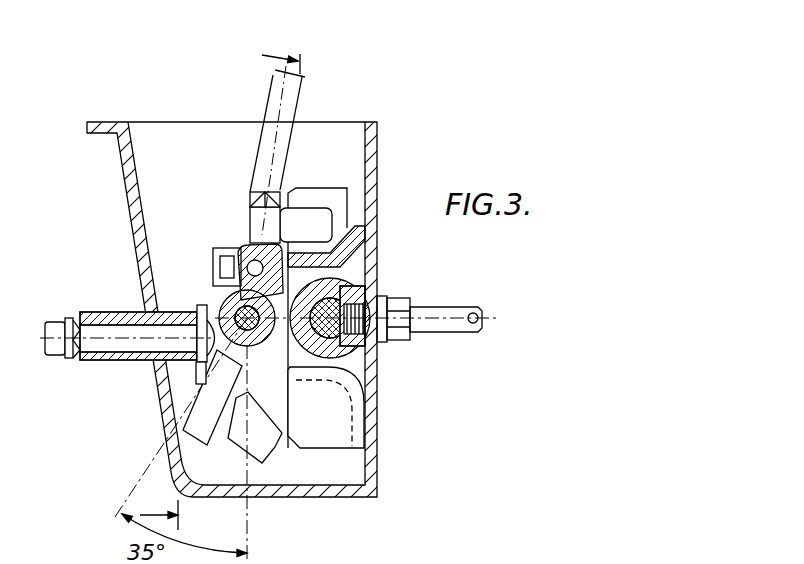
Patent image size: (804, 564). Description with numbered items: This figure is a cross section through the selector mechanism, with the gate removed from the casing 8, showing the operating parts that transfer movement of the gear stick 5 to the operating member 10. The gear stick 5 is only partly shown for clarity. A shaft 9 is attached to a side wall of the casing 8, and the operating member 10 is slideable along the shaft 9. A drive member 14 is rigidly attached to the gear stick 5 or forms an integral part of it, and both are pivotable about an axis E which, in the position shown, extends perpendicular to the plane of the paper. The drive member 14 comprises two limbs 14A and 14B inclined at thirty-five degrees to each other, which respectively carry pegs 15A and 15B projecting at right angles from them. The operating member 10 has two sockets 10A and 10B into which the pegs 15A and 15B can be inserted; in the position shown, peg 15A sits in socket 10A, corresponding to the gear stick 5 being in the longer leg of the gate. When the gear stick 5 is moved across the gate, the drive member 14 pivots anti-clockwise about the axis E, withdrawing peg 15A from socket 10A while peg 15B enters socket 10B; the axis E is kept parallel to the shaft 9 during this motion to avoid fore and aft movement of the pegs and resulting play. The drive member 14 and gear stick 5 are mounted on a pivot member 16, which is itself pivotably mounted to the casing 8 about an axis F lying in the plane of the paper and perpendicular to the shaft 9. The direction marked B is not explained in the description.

The gear stick 5 is at (272, 108).
The casing 8 is at (122, 168).
The shaft 9 is at (372, 275).
The operating member 10 is at (394, 297).
The socket 10A is at (365, 245).
The socket 10B is at (328, 412).
The drive member 14 is at (177, 396).
The limb 14A is at (250, 203).
The limb 14B is at (203, 386).
The peg 15A is at (320, 218).
The peg 15B is at (205, 432).
The pivot member 16 is at (207, 362).
The direction of movement B is at (220, 284).
The axis E is at (262, 394).
The axis F is at (118, 336).